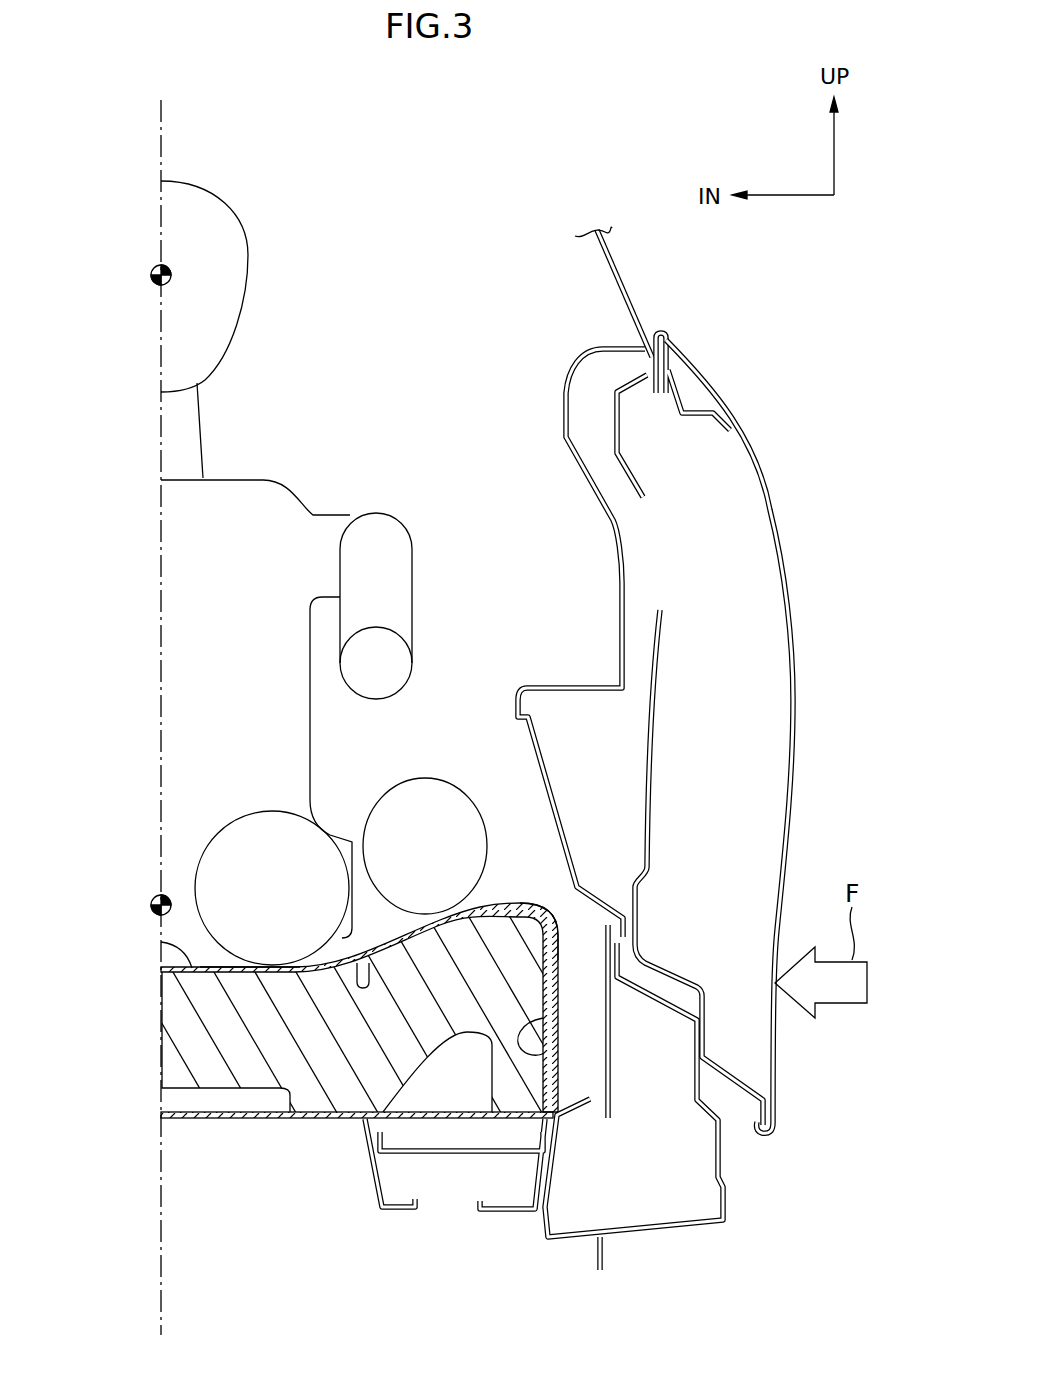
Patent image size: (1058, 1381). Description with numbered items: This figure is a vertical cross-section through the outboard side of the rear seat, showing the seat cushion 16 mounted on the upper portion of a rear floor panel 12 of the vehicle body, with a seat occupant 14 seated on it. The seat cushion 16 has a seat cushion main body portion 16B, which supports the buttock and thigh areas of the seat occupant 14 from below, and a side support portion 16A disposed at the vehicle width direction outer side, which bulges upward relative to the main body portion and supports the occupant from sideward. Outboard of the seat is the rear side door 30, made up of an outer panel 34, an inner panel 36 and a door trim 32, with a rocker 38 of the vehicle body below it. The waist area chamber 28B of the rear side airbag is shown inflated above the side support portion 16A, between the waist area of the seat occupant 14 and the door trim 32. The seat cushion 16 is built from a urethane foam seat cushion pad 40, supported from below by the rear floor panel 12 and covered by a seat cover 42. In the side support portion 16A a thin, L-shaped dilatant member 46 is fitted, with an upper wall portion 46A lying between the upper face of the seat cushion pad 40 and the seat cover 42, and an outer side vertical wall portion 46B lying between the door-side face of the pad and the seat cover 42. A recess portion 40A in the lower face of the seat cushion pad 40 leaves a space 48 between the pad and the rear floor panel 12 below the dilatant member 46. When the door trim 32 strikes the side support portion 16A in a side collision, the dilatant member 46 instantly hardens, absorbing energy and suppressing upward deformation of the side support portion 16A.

The rear floor panel 12 is at (222, 1119).
The seat occupant 14 is at (258, 478).
The seat cushion 16 is at (360, 1019).
The side support portion 16A is at (523, 903).
The seat cushion main body portion 16B is at (227, 967).
The waist area chamber 28B is at (422, 778).
The rear side door 30 is at (696, 748).
The door trim 32 is at (615, 558).
The outer panel 34 is at (795, 712).
The inner panel 36 is at (652, 727).
The rocker 38 is at (733, 1202).
The seat cushion pad 40 is at (321, 1054).
The recess portion 40A is at (405, 1100).
The seat cover 42 is at (193, 967).
The dilatant member 46 is at (487, 1013).
The upper wall portion 46A is at (357, 960).
The outer side vertical wall portion 46B is at (553, 1057).
The space 48 is at (441, 1093).